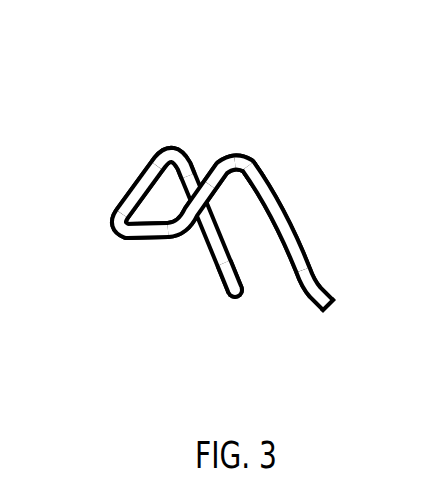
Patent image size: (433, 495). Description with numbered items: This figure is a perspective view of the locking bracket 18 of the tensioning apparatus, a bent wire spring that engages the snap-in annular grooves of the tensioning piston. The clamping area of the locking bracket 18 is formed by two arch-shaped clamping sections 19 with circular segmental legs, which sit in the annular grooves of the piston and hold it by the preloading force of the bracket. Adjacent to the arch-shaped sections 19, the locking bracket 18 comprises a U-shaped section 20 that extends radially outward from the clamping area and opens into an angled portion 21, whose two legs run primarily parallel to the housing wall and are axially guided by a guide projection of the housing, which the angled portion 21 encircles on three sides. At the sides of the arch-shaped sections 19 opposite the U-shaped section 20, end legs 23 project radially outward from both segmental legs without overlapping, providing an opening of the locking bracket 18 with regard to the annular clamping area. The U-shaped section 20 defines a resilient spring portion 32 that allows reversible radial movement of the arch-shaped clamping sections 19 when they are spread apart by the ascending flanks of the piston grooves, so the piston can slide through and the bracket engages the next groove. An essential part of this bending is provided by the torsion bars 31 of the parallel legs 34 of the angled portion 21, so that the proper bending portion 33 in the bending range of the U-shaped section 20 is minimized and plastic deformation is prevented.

The locking bracket 18 is at (188, 85).
The arch-shaped clamping sections 19 is at (213, 226).
The U-shaped section 20 is at (254, 146).
The angled portion 21 is at (134, 176).
The end legs 23 is at (242, 301).
The torsion bars 31 is at (138, 191).
The spring portion 32 is at (225, 146).
The bending portion 33 is at (257, 186).
The parallel legs 34 is at (169, 146).